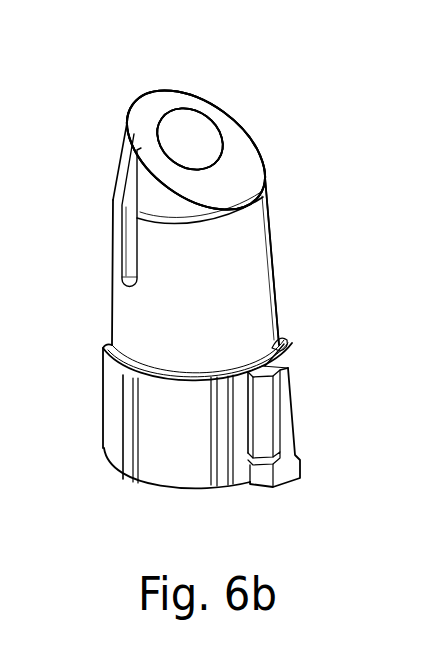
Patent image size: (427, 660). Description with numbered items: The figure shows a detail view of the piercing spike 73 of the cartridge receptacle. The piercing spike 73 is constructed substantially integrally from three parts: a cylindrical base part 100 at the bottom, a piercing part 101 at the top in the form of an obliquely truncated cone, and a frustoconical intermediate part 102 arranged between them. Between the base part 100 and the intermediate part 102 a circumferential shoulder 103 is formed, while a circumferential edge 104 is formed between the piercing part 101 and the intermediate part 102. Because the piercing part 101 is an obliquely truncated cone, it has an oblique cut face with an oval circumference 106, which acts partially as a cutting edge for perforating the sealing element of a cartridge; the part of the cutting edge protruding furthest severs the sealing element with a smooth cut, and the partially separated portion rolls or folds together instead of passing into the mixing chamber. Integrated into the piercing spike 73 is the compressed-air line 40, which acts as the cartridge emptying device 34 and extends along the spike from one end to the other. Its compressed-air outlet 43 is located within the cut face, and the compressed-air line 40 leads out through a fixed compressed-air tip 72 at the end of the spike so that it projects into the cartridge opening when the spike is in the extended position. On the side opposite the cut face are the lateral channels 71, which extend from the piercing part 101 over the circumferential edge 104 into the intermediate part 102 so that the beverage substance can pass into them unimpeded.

The cartridge emptying device 34 is at (193, 127).
The compressed-air line 40 is at (190, 139).
The compressed-air outlet 43 is at (178, 124).
The lateral channels 71 is at (133, 247).
The compressed-air tip 72 is at (150, 130).
The piercing spike 73 is at (230, 136).
The base part 100 is at (304, 352).
The piercing part 101 is at (278, 130).
The intermediate part 102 is at (290, 196).
The circumferential shoulder 103 is at (280, 341).
The circumferential edge 104 is at (266, 193).
The oval circumference 106 is at (147, 92).